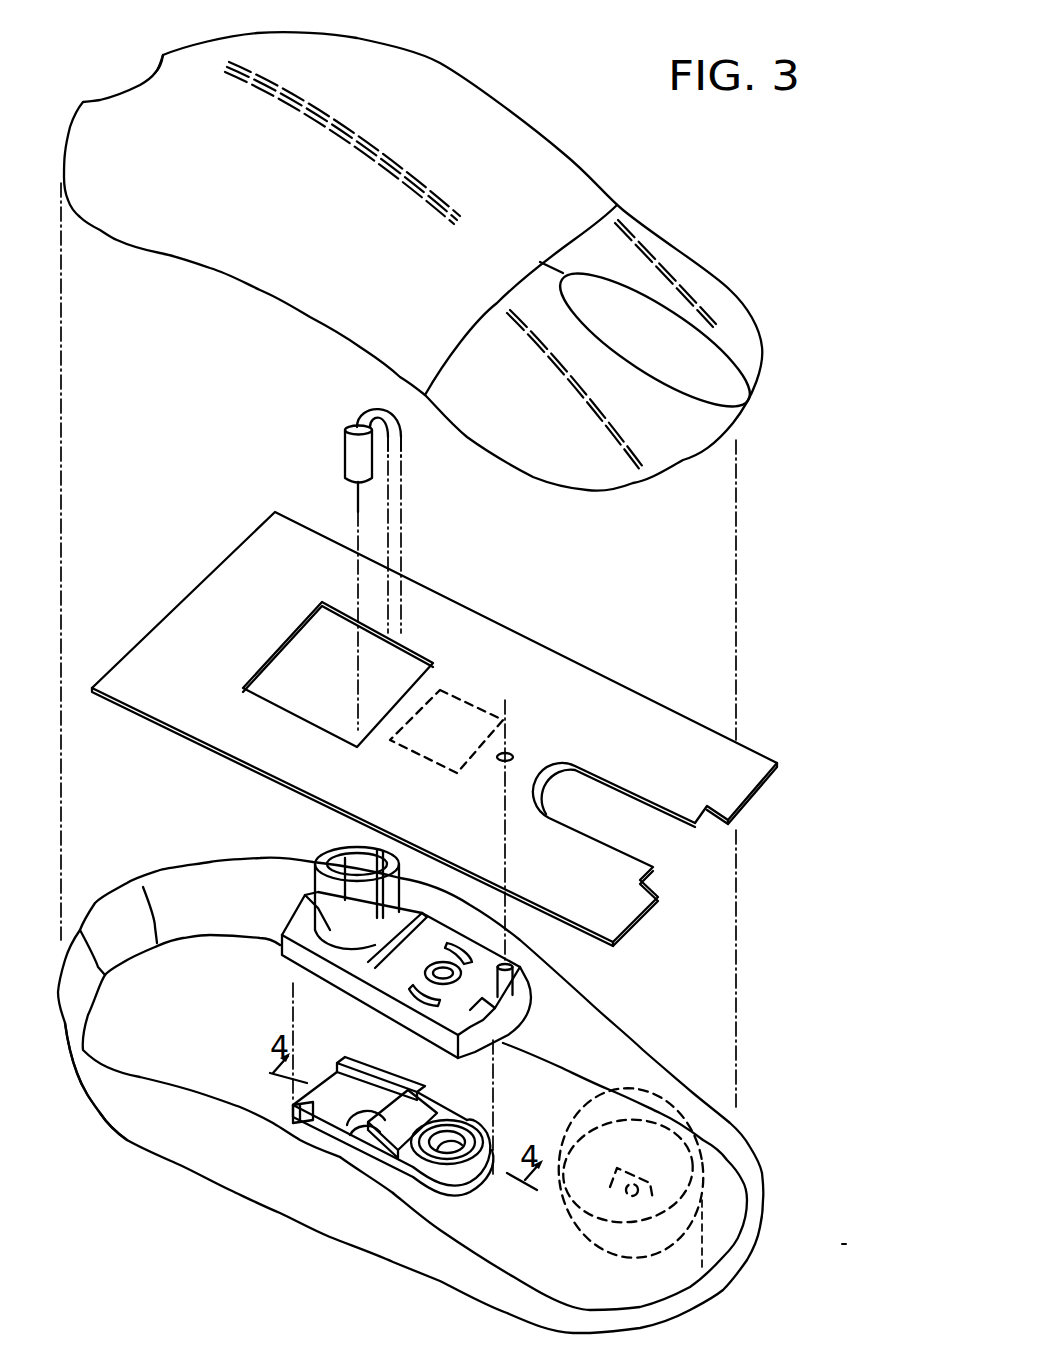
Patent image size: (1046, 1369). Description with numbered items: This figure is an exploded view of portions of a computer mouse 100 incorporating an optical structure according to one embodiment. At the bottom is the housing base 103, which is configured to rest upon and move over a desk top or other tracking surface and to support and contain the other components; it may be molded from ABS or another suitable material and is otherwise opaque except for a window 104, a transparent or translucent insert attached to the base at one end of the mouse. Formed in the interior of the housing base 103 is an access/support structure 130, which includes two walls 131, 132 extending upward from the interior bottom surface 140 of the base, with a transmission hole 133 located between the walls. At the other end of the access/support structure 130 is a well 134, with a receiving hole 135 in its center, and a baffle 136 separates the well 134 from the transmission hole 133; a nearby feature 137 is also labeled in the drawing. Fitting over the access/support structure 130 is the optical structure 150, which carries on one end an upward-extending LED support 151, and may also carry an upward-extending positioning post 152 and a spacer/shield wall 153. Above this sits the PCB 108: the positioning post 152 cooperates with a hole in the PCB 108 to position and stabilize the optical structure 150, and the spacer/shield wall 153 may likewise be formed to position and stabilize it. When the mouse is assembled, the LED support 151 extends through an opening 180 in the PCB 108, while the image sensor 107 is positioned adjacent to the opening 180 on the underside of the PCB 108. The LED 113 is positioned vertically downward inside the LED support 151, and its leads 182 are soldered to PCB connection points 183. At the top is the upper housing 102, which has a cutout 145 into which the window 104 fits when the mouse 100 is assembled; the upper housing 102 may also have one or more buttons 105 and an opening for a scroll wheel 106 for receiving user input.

The computer mouse 100 is at (822, 538).
The upper housing 102 is at (333, 53).
The housing base 103 is at (150, 1138).
The window 104 is at (115, 887).
The buttons 105 is at (713, 303).
The opening for a scroll wheel 106 is at (710, 1127).
The image sensor 107 is at (470, 703).
The PCB 108 is at (657, 722).
The LED 113 is at (343, 456).
The access/support structure 130 is at (465, 1200).
The wall 131 is at (390, 1070).
The wall 132 is at (307, 1140).
The transmission hole 133 is at (358, 1133).
The well 134 is at (393, 1187).
The receiving hole 135 is at (492, 1132).
The baffle 136 is at (407, 1113).
The arm 137 is at (337, 1113).
The interior bottom surface 140 is at (205, 940).
The cutout 145 is at (153, 72).
The optical structure 150 is at (410, 882).
The LED support 151 is at (408, 850).
The positioning post 152 is at (513, 970).
The spacer/shield wall 153 is at (463, 940).
The opening 180 is at (286, 647).
The leads 182 is at (373, 403).
The PCB connection points 183 is at (390, 633).